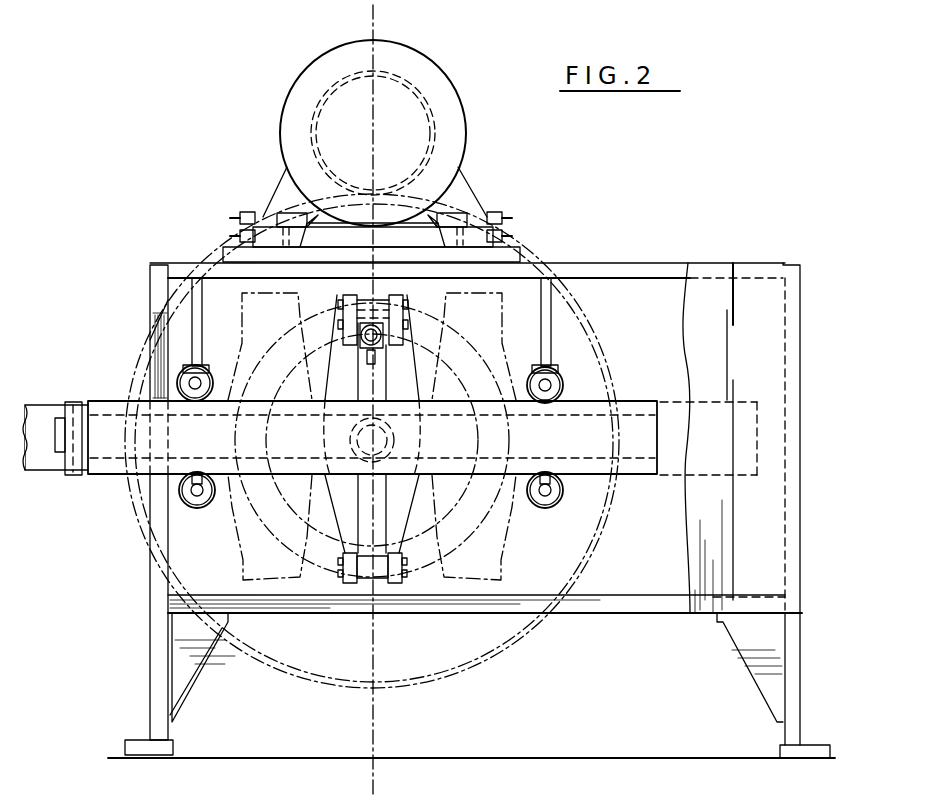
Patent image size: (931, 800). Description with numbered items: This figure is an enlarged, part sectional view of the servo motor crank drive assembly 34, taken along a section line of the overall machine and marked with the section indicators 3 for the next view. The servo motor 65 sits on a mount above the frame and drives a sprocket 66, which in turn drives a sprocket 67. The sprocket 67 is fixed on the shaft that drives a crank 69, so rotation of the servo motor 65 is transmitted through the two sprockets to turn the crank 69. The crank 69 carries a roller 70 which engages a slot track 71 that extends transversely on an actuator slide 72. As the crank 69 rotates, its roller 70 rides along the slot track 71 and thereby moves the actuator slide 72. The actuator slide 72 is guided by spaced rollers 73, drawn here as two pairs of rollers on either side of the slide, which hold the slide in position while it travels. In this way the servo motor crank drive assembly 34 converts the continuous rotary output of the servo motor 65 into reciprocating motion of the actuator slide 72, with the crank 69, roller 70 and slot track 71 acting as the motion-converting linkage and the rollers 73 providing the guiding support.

The section line 3- 3 is at (378, 23).
The servo motor crank drive assembly 34 is at (616, 256).
The servo motor 65 is at (455, 90).
The sprocket 66 is at (310, 128).
The sprocket 67 is at (296, 200).
The crank 69 is at (372, 483).
The roller 70 is at (382, 338).
The slot track 71 is at (360, 520).
The actuator slide 72 is at (450, 470).
The rollers 73 is at (204, 368).